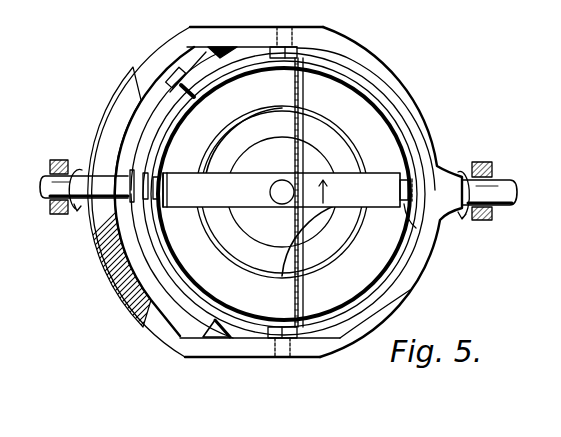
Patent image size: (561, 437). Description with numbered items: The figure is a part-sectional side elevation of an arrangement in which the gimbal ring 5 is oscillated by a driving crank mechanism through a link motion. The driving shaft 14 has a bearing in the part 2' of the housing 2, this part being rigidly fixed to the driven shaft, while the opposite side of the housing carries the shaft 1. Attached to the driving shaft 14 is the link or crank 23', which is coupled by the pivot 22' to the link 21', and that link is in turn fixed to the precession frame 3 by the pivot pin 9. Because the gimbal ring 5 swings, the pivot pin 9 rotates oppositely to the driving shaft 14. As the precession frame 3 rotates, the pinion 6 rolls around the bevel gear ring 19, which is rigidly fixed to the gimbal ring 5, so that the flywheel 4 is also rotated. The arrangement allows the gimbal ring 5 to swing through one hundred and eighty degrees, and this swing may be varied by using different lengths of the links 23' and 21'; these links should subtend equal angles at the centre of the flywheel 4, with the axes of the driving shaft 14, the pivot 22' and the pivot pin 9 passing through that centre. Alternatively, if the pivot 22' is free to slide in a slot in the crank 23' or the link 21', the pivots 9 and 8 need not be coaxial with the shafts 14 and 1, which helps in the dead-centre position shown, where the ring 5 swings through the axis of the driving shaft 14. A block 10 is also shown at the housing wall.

The shaft 1 is at (503, 185).
The housing part 2 is at (288, 192).
The part rigidly fixed to the driven shaft 2' is at (224, 194).
The precession frame 3 is at (381, 174).
The flywheel 4 is at (362, 225).
The gimbal ring 5 is at (363, 293).
The pinion 6 is at (270, 192).
The pivot 8 is at (414, 205).
The pivot pin 9 is at (166, 176).
The stop block 10 is at (300, 51).
The driving shaft 14 is at (45, 172).
The bevel gear ring 19 is at (304, 99).
The link 21' is at (150, 211).
The pivot 22' is at (187, 52).
The link or crank 23' is at (128, 200).